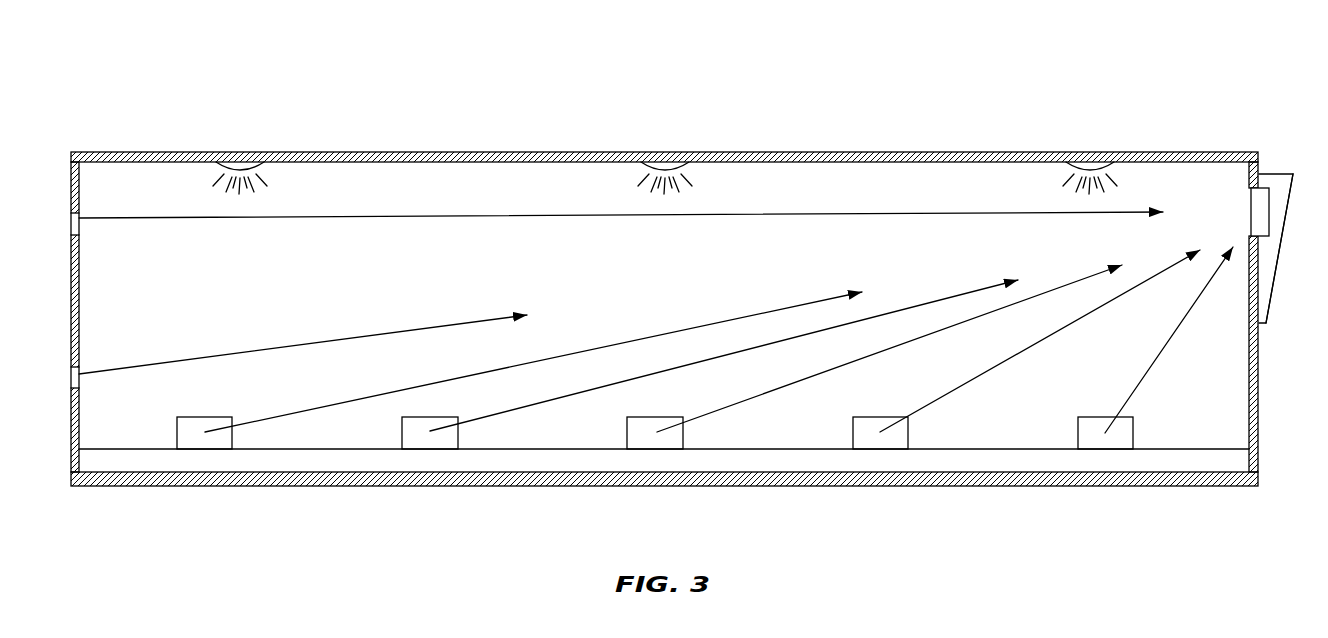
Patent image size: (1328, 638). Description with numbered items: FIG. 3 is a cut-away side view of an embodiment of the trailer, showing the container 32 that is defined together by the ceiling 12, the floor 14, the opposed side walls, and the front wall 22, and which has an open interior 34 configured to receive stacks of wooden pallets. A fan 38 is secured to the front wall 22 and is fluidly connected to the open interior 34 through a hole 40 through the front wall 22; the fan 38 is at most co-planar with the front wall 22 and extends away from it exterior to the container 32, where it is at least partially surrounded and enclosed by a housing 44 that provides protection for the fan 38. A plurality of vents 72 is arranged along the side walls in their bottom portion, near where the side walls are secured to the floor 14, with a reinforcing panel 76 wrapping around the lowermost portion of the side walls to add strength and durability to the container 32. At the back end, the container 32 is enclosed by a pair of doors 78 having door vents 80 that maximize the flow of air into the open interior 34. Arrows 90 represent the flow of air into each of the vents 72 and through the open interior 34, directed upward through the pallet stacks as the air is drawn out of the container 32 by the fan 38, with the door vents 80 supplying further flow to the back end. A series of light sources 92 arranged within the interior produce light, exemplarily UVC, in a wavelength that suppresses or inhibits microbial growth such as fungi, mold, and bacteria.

The container 32 is at (124, 96).
The ceiling 12 is at (772, 152).
The floor 14 is at (805, 487).
The front wall 22 is at (1258, 396).
The open interior 34 is at (722, 284).
The fan 38 is at (1263, 195).
The hole 40 is at (1250, 210).
The housing 44 is at (1272, 283).
The vents 72 is at (177, 432).
The reinforcing panel 76 is at (1222, 460).
The doors 78 is at (72, 280).
The door vents 80 is at (72, 212).
The arrows 90 is at (320, 219).
The light sources 92 is at (240, 170).